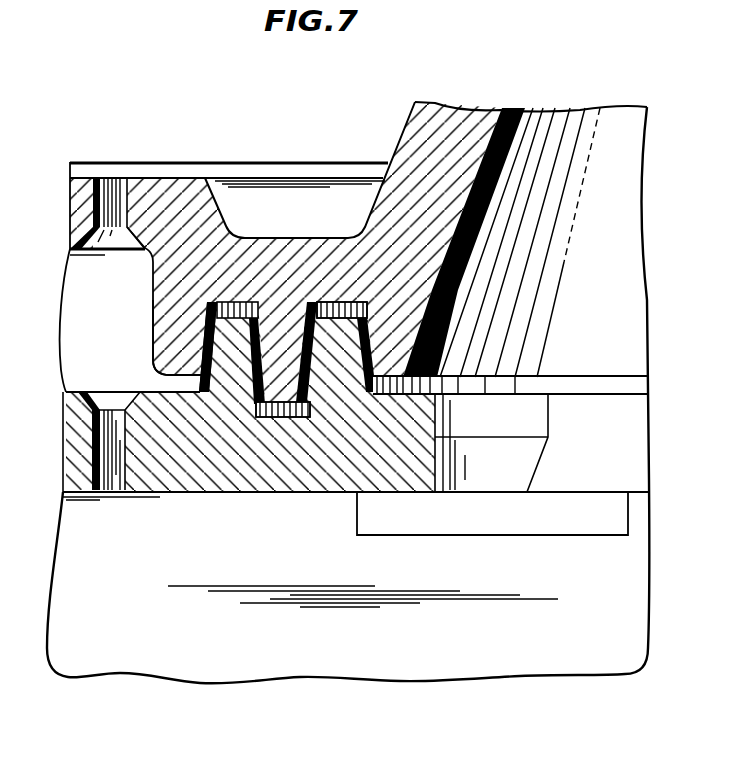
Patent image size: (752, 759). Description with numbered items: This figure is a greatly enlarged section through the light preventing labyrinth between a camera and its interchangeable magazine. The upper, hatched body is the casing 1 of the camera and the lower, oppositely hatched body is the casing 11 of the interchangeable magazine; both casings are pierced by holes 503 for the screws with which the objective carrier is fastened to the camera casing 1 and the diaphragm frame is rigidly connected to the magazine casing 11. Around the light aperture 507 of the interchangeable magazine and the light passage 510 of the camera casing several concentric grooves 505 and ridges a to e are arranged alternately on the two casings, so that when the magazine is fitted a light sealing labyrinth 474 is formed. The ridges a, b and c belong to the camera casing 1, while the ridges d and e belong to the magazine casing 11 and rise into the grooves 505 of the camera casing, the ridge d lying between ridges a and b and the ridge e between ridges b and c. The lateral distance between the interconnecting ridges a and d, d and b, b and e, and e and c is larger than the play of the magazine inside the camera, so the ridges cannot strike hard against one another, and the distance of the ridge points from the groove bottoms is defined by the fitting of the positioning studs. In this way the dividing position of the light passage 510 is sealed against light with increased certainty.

The casing of the camera 1 is at (77, 187).
The casing of the interchangeable magazine 11 is at (66, 448).
The holes for the screws 503 is at (94, 224).
The grooves 505 is at (260, 303).
The light sealing labyrinth 474 is at (304, 410).
The light passage 510 is at (528, 120).
The light aperture 507 is at (633, 468).
The ridge a is at (167, 344).
The ridge b is at (288, 400).
The ridge c is at (388, 376).
The ridge d is at (212, 323).
The ridge e is at (356, 305).